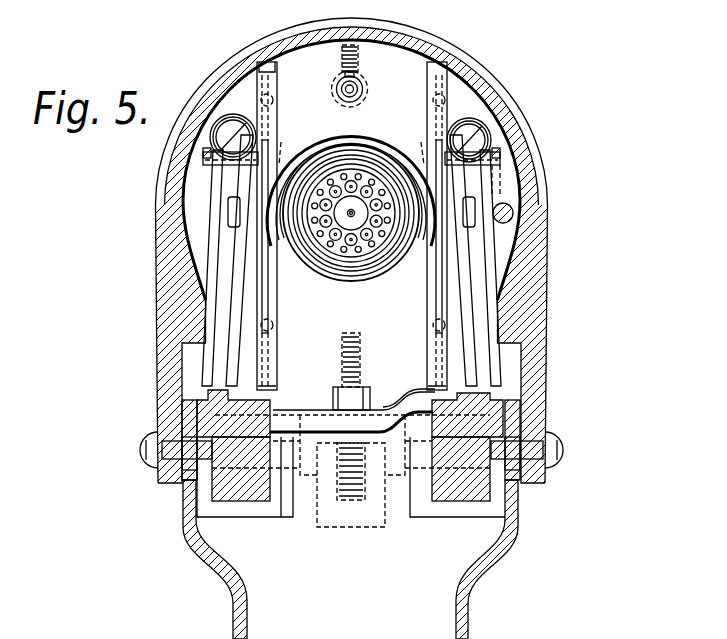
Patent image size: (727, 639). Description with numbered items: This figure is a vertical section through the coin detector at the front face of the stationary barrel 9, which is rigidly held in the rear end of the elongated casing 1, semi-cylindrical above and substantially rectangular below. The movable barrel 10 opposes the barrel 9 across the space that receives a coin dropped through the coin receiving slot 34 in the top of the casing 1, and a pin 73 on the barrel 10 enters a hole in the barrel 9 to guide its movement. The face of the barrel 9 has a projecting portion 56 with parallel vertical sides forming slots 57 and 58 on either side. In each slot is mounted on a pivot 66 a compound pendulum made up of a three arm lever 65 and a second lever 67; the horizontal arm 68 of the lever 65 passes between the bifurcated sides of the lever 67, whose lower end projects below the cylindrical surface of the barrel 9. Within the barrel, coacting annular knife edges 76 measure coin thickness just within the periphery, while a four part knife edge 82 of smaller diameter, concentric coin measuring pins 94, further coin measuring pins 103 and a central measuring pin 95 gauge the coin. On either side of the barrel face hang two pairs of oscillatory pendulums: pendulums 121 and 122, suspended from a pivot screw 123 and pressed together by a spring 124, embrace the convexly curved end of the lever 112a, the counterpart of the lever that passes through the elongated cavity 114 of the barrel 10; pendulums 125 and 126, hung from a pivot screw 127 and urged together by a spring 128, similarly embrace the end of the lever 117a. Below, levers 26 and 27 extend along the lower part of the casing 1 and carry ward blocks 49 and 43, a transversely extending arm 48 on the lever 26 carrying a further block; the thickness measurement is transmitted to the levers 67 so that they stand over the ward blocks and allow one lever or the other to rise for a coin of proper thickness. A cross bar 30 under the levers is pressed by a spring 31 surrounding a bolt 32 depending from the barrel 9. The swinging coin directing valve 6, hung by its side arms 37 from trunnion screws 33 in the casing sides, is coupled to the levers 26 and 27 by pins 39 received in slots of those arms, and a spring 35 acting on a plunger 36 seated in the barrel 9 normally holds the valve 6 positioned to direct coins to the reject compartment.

The casing 1 is at (532, 311).
The coin directing valve 6 is at (469, 606).
The stationary barrel 9 is at (400, 67).
The movable barrel 10 is at (306, 630).
The lever 26 is at (462, 501).
The lever 27 is at (241, 501).
The cross bar 30 is at (281, 483).
The spring 31 is at (390, 498).
The bolt 32 is at (344, 528).
The trunnion screws 33 is at (150, 440).
The coin receiving slot 34 is at (304, 27).
The spring 35 is at (357, 357).
The plunger 36 is at (340, 395).
The side arms 37 is at (184, 488).
The pins 39 is at (180, 487).
The ward block 43 is at (197, 403).
The transversely extending arm 48 is at (302, 436).
The ward block 49 is at (475, 410).
The projecting portion 56 is at (297, 70).
The slot 57 is at (265, 66).
The slot 58 is at (437, 76).
The three arm lever 65 is at (262, 268).
The pivot 66 is at (280, 158).
The lever 67 is at (266, 380).
The horizontal arm 68 is at (203, 165).
The pin 73 is at (515, 211).
The annular knife edges 76 is at (325, 150).
The measuring knife edge 82 is at (355, 163).
The coin measuring pins 94 is at (323, 247).
The central measuring pin 95 is at (360, 222).
The coin measuring pins 103 is at (360, 250).
The lever 112a is at (497, 186).
The elongated cavity 114 is at (510, 172).
The lever 117a is at (228, 200).
The pendulum 121 is at (487, 254).
The pendulum 122 is at (463, 278).
The pivot screw 123 is at (471, 134).
The spring 124 is at (515, 156).
The pendulum 125 is at (212, 251).
The pendulum 126 is at (230, 300).
The pivot screw 127 is at (232, 128).
The spring 128 is at (228, 214).